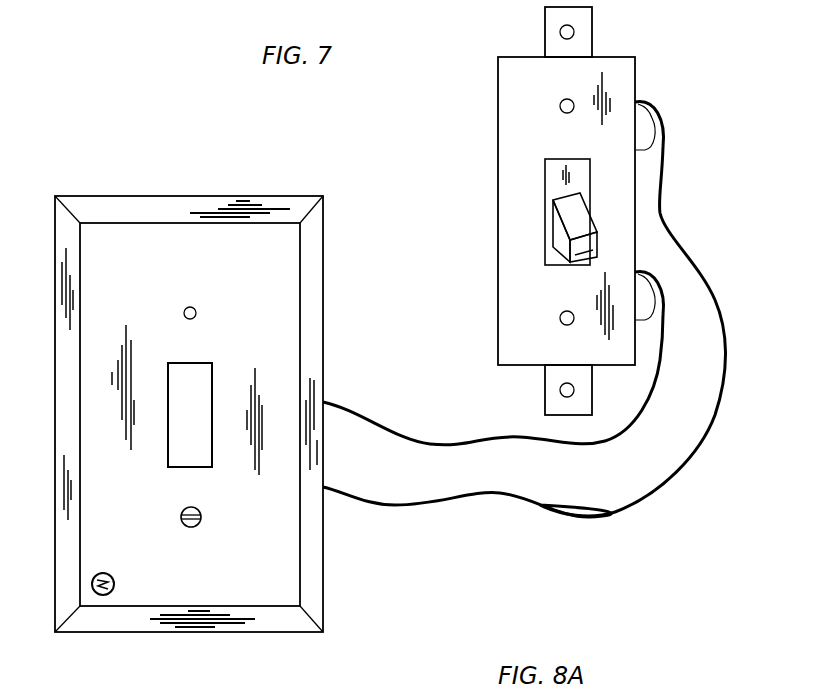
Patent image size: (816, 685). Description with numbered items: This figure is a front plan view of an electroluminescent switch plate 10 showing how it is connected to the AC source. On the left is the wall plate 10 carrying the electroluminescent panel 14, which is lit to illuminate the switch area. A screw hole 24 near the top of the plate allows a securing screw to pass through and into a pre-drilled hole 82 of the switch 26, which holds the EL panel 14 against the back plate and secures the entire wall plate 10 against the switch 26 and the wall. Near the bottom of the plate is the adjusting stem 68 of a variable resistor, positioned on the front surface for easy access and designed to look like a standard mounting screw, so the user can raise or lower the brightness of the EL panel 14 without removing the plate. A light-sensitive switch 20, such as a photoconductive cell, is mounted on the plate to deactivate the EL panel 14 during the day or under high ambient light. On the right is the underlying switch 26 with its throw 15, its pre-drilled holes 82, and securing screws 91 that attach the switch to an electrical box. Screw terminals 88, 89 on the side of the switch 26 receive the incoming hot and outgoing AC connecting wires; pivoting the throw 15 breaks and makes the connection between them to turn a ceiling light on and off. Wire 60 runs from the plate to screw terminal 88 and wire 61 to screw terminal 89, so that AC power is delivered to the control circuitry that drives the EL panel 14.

The switch plate 10 is at (110, 165).
The electroluminescent panel 14 is at (103, 327).
The throw 15 is at (577, 212).
The light-sensitive switch 20 is at (112, 594).
The screw hole 24 is at (195, 308).
The switch 26 is at (637, 67).
The wire 60 is at (372, 417).
The wire 61 is at (688, 462).
The adjusting stem 68 is at (188, 527).
The pre-drilled hole 82 is at (560, 103).
The screw terminal 88 is at (662, 138).
The screw terminal 89 is at (653, 280).
The securing screw 91 is at (560, 31).